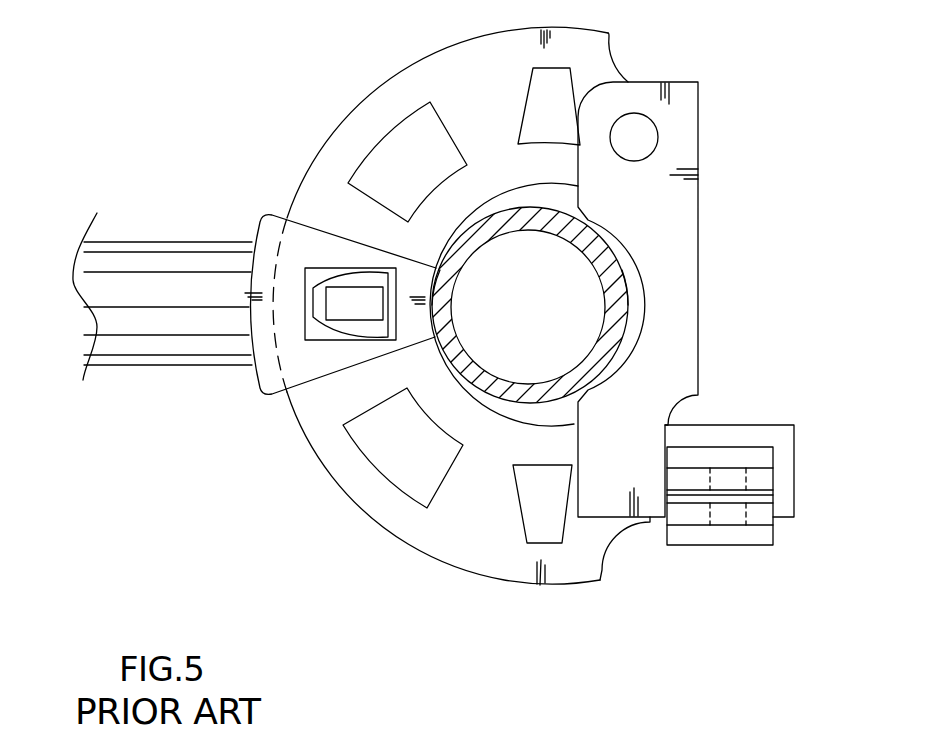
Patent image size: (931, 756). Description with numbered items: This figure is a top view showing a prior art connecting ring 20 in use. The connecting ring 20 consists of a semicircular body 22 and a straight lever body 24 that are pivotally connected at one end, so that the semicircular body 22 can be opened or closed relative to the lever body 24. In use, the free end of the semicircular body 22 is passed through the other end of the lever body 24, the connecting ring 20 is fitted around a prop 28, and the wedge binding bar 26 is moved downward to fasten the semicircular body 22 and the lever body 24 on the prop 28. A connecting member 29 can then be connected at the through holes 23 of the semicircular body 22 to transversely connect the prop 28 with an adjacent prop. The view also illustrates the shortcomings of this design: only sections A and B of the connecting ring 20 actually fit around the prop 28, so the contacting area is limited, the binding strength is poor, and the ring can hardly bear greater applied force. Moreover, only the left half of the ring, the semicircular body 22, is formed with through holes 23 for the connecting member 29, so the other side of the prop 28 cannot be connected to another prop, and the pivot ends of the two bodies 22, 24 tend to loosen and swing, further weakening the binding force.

The connecting ring 20 is at (530, 325).
The semicircular body 22 is at (303, 175).
The through holes 23 is at (402, 150).
The lever body 24 is at (672, 262).
The wedge binding bar 26 is at (737, 547).
The prop 28 is at (514, 392).
The connecting member 29 is at (158, 342).
The section A of the connecting ring A is at (436, 298).
The section B of the connecting ring B is at (622, 305).